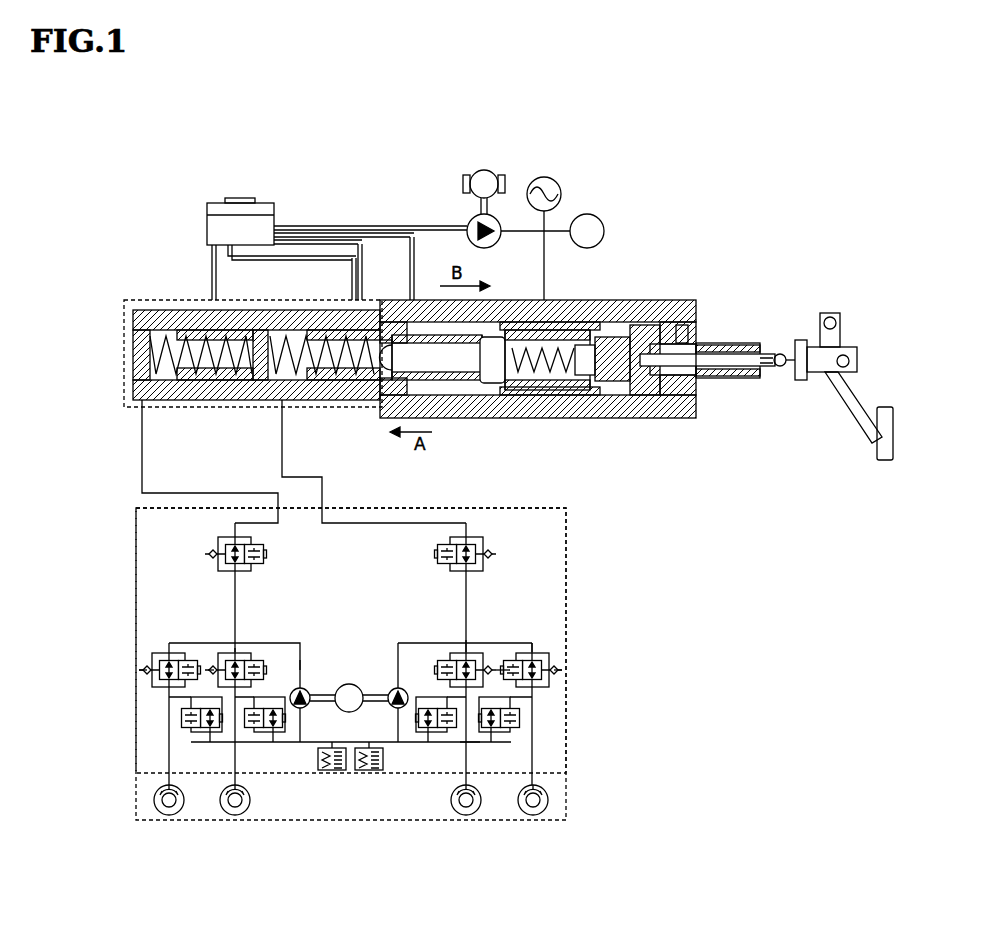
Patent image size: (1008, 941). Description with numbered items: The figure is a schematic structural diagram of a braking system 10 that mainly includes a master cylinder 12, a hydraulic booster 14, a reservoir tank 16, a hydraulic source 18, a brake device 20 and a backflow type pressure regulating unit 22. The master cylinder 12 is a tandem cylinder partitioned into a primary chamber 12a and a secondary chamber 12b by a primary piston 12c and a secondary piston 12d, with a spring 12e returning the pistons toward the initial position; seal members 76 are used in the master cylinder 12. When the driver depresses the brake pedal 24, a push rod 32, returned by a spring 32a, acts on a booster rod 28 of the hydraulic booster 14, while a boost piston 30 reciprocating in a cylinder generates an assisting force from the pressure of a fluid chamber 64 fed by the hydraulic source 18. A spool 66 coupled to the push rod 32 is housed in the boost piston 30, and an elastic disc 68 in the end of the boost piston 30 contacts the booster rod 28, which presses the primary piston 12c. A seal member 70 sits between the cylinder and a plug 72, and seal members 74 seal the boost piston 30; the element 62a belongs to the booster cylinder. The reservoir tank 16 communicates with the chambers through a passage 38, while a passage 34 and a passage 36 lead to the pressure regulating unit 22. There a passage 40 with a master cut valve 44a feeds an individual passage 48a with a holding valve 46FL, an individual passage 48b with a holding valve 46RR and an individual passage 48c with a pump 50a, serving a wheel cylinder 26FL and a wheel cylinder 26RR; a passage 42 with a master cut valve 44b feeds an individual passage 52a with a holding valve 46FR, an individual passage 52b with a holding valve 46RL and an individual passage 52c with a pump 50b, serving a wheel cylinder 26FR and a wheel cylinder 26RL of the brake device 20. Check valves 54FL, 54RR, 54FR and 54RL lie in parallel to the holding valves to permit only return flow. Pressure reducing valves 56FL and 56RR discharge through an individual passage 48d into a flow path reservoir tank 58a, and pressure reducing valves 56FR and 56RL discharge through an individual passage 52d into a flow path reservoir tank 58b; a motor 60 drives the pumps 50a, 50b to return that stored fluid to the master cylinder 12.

The braking system 10 is at (732, 232).
The master cylinder 12 is at (150, 298).
The primary chamber 12a is at (308, 400).
The secondary chamber 12b is at (160, 400).
The primary piston 12c is at (400, 408).
The secondary piston 12d is at (238, 400).
The spring 12e is at (134, 345).
The hydraulic booster 14 is at (630, 296).
The reservoir tank 16 is at (213, 197).
The hydraulic source 18 is at (516, 160).
The brake device 20 is at (572, 790).
The backflow type pressure regulating unit 22 is at (130, 657).
The brake pedal 24 is at (856, 385).
The wheel cylinder 26FR is at (182, 812).
The wheel cylinder 26RL is at (248, 812).
The wheel cylinder 26RR is at (478, 812).
The wheel cylinder 26FL is at (546, 812).
The booster rod 28 is at (468, 418).
The boost piston 30 is at (570, 418).
The push rod 32 is at (716, 345).
The spring 32a is at (540, 418).
The passage 34 is at (283, 465).
The passage 36 is at (142, 468).
The passage 38 is at (210, 252).
The passage 40 is at (469, 592).
The passage 42 is at (238, 592).
The master cut valve 44a is at (440, 546).
The master cut valve 44b is at (262, 546).
The holding valve 46FR is at (168, 652).
The holding valve 46RL is at (262, 660).
The holding valve 46RR is at (445, 655).
The holding valve 46FL is at (528, 652).
The individual passage 48a is at (558, 650).
The individual passage 48b is at (468, 645).
The individual passage 48c is at (398, 645).
The individual passage 48d is at (470, 742).
The pump 50a is at (396, 688).
The pump 50b is at (302, 708).
The individual passage 52a is at (150, 660).
The individual passage 52b is at (238, 655).
The individual passage 52c is at (324, 664).
The individual passage 52d is at (245, 742).
The check valve 54FR is at (147, 675).
The check valve 54RL is at (212, 660).
The check valve 54RR is at (500, 662).
The check valve 54FL is at (560, 675).
The pressure reducing valve 56FR is at (206, 733).
The pressure reducing valve 56RL is at (273, 735).
The pressure reducing valve 56RR is at (428, 735).
The pressure reducing valve 56FL is at (522, 718).
The flow path reservoir tank 58a is at (369, 771).
The flow path reservoir tank 58b is at (332, 771).
The motor 60 is at (349, 684).
The simulator piston 62a is at (690, 418).
The fluid chamber 64 is at (646, 418).
The spool 66 is at (612, 418).
The disc 68 is at (495, 418).
The seal member 70 is at (680, 300).
The plug 72 is at (698, 312).
The seal member 74 is at (620, 303).
The seal member 76 is at (212, 300).